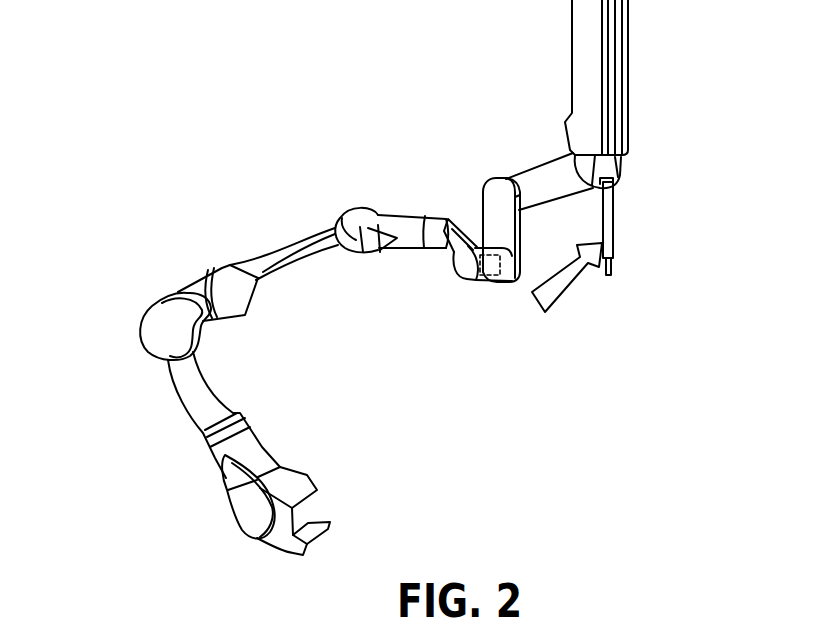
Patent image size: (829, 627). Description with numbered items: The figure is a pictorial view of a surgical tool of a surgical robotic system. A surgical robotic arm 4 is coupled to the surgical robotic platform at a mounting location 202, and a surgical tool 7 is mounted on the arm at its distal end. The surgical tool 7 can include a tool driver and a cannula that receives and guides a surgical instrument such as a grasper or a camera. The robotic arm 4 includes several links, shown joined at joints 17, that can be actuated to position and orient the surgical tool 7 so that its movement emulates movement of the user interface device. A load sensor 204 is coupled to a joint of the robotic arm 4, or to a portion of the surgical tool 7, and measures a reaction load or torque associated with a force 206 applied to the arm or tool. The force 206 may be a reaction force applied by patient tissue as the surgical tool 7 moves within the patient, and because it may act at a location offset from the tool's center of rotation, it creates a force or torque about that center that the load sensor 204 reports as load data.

The surgical robotic arm 4 is at (262, 205).
The surgical tool 7 is at (640, 60).
The joint 17 is at (340, 218).
The mounting location 202 is at (303, 515).
The load sensor 204 is at (493, 282).
The force 206 is at (562, 297).